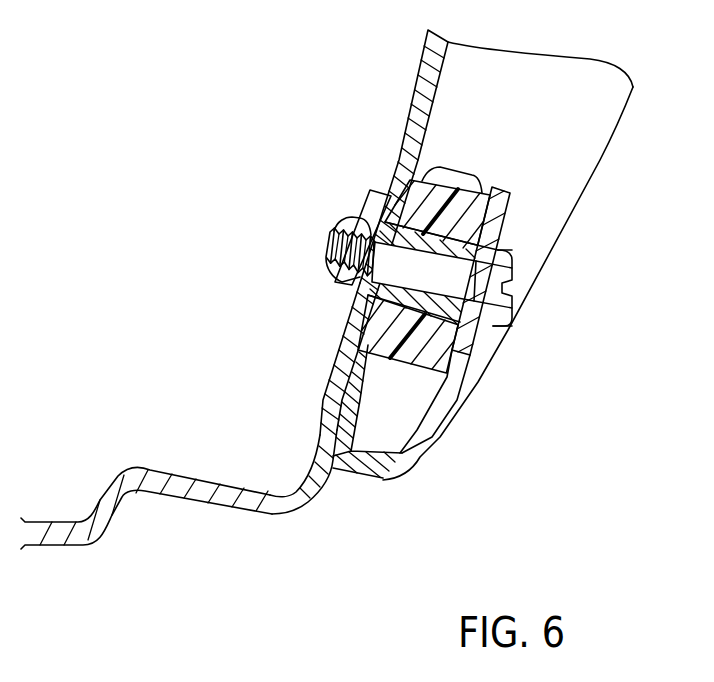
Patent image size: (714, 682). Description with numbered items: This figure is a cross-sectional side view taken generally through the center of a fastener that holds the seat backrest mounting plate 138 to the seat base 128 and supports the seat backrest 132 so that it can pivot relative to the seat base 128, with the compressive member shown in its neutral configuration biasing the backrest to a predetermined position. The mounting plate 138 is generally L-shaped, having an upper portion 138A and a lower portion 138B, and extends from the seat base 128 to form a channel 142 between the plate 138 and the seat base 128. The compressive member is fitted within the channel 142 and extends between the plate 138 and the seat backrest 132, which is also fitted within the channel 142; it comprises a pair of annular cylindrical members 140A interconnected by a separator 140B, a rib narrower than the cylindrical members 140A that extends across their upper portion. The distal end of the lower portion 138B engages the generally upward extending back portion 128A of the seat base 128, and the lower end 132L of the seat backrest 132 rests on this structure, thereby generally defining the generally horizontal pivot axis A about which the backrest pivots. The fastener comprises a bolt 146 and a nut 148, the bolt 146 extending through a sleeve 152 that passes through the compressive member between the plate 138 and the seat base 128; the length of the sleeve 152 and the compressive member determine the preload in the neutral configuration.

The channel 142 is at (501, 118).
The seat backrest 132 is at (408, 113).
The lower end of seat backrest 132L is at (353, 490).
The seat base 128 is at (228, 510).
The back portion of seat base 128A is at (348, 326).
The nut 148 is at (328, 273).
The bolt 146 is at (360, 216).
The cylindrical member 140A is at (393, 341).
The separator 140B is at (458, 180).
The sleeve 152 is at (510, 268).
The seat backrest mounting plate 138 is at (452, 421).
The upper portion of mounting plate 138A is at (501, 231).
The lower portion of mounting plate 138B is at (383, 483).
The pivot axis A is at (330, 476).